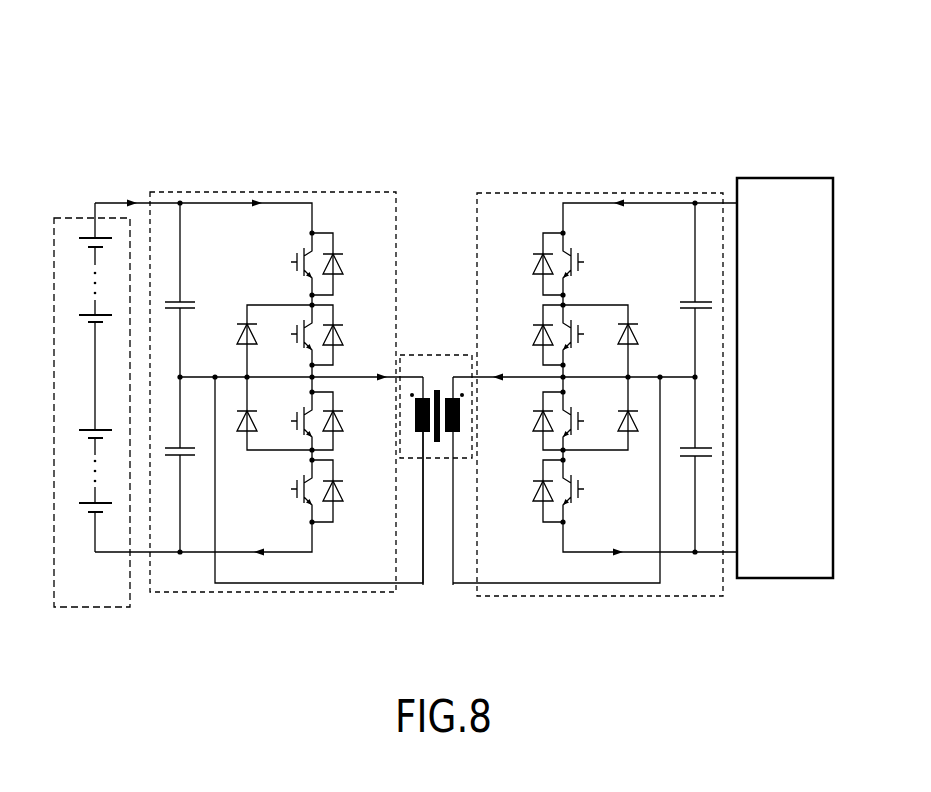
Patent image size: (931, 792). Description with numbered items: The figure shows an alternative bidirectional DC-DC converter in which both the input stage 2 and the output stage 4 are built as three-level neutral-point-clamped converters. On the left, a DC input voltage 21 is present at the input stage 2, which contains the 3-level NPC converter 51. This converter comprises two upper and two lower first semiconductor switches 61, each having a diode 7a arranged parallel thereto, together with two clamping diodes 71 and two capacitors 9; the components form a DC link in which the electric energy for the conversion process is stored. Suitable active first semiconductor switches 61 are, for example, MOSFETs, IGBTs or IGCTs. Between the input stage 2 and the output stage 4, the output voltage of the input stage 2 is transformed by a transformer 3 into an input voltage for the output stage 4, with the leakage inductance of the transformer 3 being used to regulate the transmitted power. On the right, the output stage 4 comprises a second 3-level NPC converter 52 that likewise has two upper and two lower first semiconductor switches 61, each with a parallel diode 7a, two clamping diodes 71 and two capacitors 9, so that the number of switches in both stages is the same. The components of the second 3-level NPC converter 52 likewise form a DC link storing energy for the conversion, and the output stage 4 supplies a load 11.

The input stage 2 is at (209, 110).
The transformer 3 is at (430, 340).
The output stage 4 is at (655, 124).
The diode 7a is at (534, 377).
The capacitor 9 is at (695, 377).
The load 11 is at (775, 165).
The DC input voltage 21 is at (74, 200).
The 3-level NPC converter 51 is at (383, 178).
The second 3-level NPC converter 52 is at (508, 178).
The first semiconductor switch 61 is at (588, 318).
The clamping diode 71 is at (640, 310).